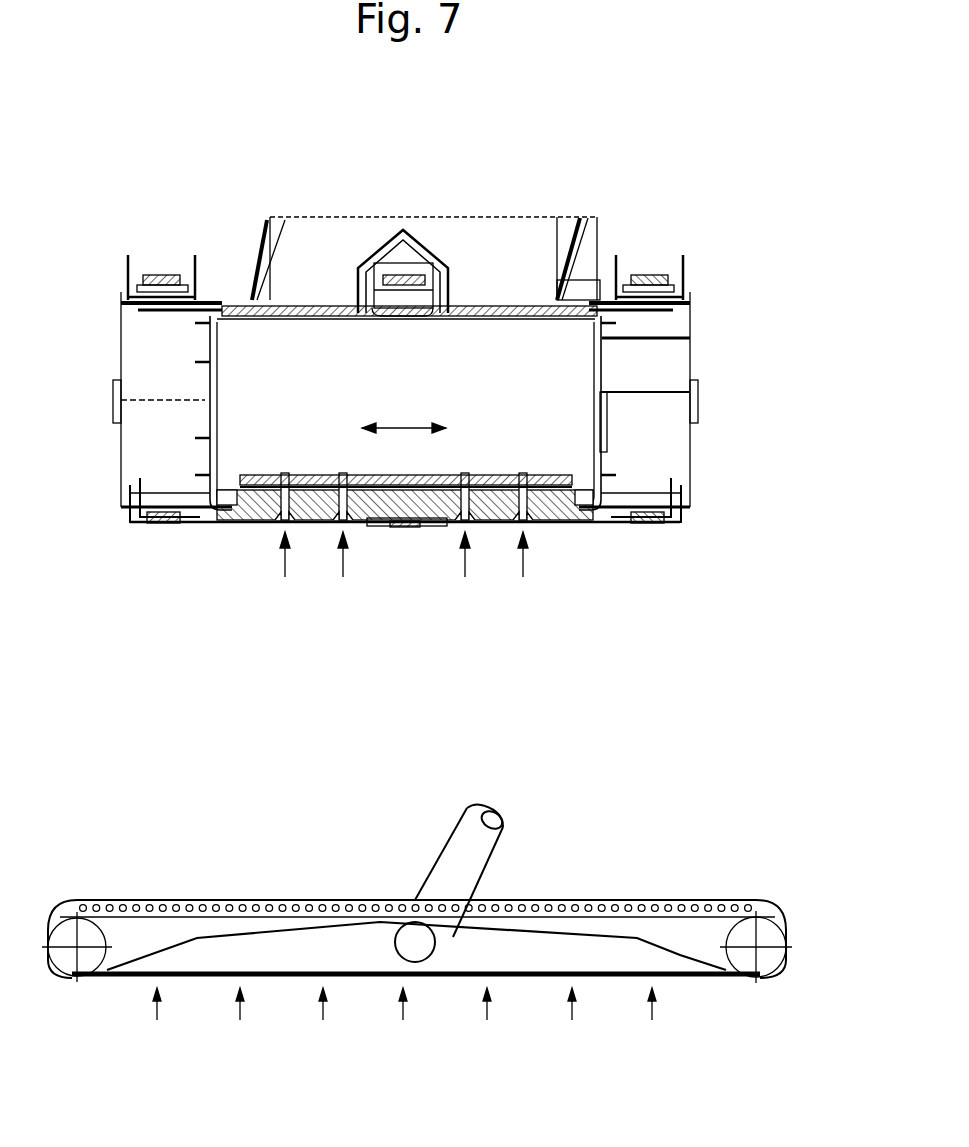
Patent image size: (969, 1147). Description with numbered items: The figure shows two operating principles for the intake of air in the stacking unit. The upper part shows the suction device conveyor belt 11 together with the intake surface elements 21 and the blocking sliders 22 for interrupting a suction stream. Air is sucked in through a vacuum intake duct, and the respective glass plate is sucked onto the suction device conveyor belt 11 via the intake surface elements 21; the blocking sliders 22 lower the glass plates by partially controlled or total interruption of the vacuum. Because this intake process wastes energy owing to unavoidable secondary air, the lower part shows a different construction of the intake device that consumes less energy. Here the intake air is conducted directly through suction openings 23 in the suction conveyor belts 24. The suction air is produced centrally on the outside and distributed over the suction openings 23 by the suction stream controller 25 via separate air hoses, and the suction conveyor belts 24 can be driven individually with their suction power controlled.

The suction device conveyor belt 11 is at (625, 275).
The intake surface elements 21 is at (252, 508).
The blocking sliders 22 is at (568, 498).
The suction openings 23 is at (645, 900).
The suction conveyor belts 24 is at (712, 905).
The suction stream controller 25 is at (448, 975).